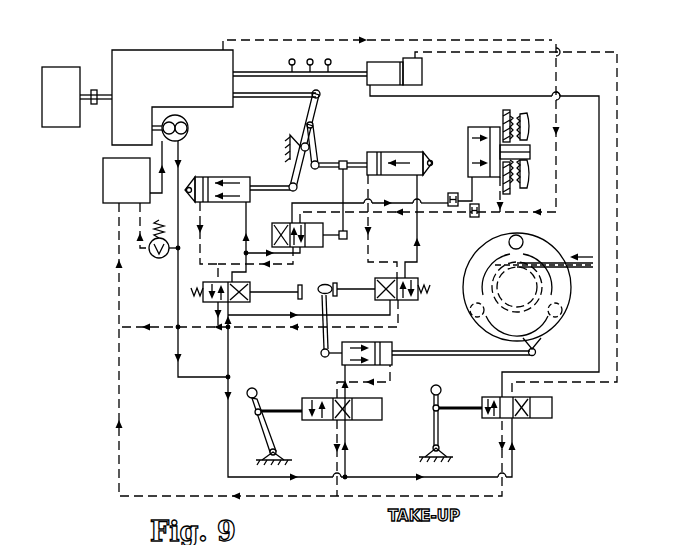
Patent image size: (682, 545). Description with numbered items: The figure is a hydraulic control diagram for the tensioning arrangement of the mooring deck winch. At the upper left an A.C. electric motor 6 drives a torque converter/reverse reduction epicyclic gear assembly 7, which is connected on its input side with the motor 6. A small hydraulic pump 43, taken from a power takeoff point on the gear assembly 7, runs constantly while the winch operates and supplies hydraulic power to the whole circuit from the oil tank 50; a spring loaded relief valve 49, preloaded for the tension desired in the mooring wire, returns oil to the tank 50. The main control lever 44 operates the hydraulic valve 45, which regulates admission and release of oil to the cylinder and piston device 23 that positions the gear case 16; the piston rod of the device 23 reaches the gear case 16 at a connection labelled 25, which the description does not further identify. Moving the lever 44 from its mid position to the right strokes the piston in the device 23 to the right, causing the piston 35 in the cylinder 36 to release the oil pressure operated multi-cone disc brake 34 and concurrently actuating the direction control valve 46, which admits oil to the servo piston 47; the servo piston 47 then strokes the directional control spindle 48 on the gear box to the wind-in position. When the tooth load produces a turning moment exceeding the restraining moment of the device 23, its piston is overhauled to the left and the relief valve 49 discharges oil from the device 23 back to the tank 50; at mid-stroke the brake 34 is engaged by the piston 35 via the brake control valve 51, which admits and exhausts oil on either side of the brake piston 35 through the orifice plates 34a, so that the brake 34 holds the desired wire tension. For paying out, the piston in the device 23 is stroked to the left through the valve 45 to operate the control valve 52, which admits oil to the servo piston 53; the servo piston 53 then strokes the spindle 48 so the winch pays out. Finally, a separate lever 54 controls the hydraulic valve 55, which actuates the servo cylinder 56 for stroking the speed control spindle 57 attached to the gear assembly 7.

The A.C. electric motor 6 is at (67, 72).
The torque converter/reverse reduction epicyclic gear assembly 7 is at (168, 63).
The hydraulic pump 43 is at (187, 136).
The oil tank 50 is at (110, 206).
The spring loaded relief valve 49 is at (152, 258).
The servo piston 53 is at (241, 177).
The directional control spindle 48 is at (258, 98).
The speed control spindle 57 is at (340, 77).
The servo cylinder 56 is at (423, 73).
The servo piston 47 is at (411, 143).
The cylinder 36 is at (470, 148).
The piston 35 is at (490, 128).
The multi-cone disc brake 34 is at (540, 152).
The orifice plates 34a is at (471, 212).
The gear case 16 is at (542, 252).
The pivot bracket 25 is at (537, 352).
The direction control valve 46 is at (418, 279).
The brake control valve 51 is at (310, 248).
The control valve 52 is at (251, 301).
The cylinder and piston device 23 is at (386, 342).
The main control lever 44 is at (265, 428).
The hydraulic valve 45 is at (308, 421).
The lever 54 is at (434, 428).
The hydraulic valve 55 is at (490, 419).